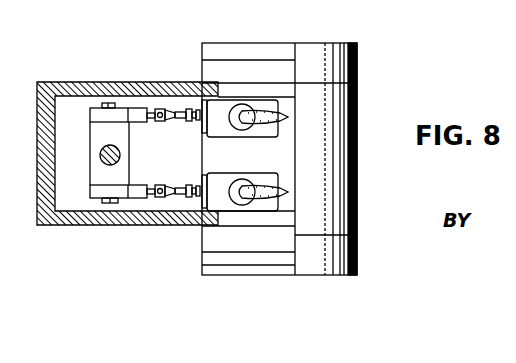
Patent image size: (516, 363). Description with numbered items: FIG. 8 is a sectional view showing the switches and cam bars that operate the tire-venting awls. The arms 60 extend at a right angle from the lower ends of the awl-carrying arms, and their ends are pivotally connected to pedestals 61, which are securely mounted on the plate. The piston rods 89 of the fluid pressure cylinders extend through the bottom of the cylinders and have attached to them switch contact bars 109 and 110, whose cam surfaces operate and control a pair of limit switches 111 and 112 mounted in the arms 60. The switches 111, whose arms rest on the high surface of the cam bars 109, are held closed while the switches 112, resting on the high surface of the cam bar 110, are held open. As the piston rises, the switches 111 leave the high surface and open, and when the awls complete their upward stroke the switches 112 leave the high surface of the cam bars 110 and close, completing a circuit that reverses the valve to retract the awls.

The arm 60 is at (87, 90).
The pedestal 61 is at (357, 70).
The piston rod 89 is at (119, 152).
The switch contact bar 109 is at (140, 193).
The switch contact bar 110 is at (124, 112).
The limit switch 111 is at (216, 197).
The limit switch 112 is at (223, 118).